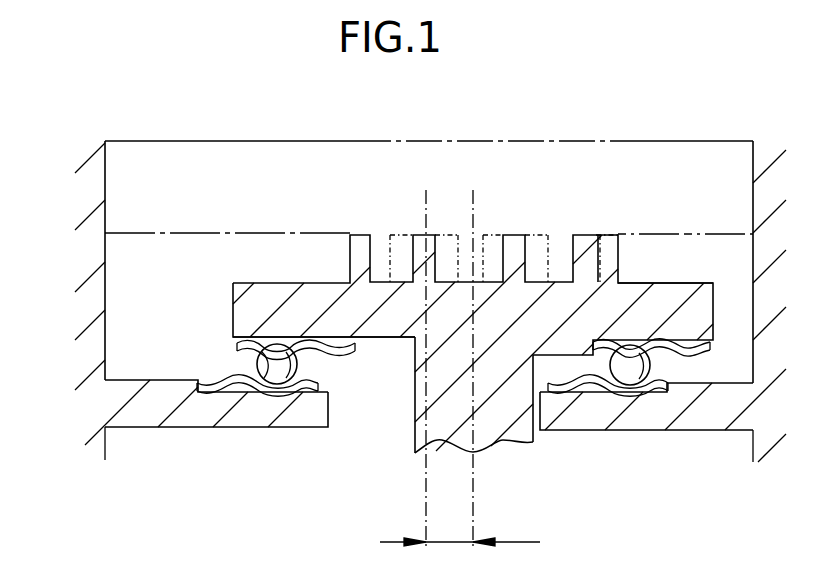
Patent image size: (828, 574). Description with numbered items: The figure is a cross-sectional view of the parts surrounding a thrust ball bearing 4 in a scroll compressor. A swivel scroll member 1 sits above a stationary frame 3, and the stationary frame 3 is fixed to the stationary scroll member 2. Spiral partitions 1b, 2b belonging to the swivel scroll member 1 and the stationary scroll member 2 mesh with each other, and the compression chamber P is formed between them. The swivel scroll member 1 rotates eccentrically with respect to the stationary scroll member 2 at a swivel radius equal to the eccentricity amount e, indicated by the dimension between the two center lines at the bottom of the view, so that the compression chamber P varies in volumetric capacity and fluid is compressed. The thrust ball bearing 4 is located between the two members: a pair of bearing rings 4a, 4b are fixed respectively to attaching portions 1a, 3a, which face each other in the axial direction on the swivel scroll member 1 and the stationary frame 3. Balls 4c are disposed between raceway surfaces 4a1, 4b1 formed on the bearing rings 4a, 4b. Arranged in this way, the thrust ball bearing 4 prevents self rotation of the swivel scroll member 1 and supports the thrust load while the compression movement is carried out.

The swivel scroll member 1 is at (306, 291).
The attaching portion 1a is at (328, 350).
The spiral partition 1b is at (612, 258).
The stationary scroll member 2 is at (176, 141).
The spiral partition 2b is at (557, 268).
The stationary frame 3 is at (150, 405).
The attaching portion 3a is at (215, 385).
The thrust ball bearing 4 is at (130, 334).
The bearing ring 4a is at (262, 350).
The raceway surface 4a1 is at (270, 343).
The bearing ring 4b is at (300, 390).
The raceway surface 4b1 is at (272, 397).
The ball 4c is at (262, 372).
The compression chamber P is at (589, 262).
The eccentricity amount e is at (460, 533).